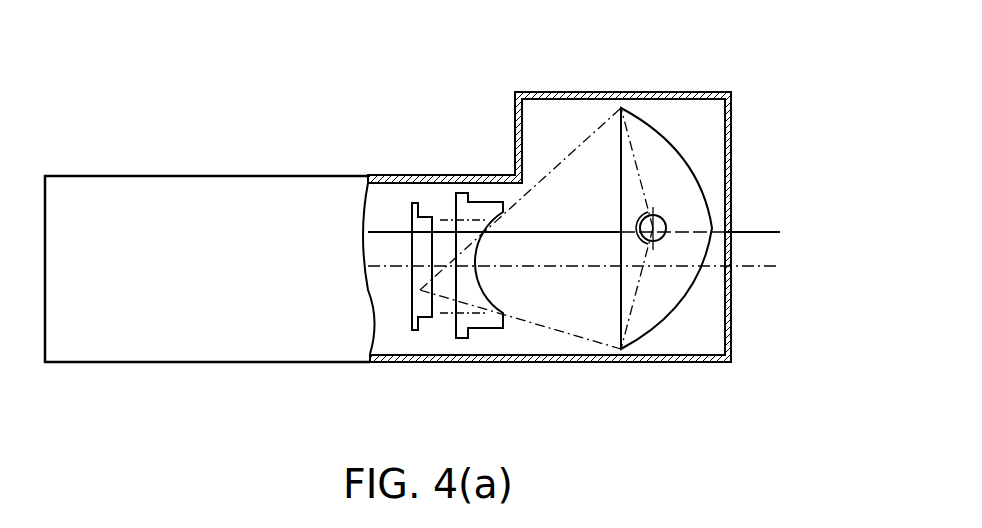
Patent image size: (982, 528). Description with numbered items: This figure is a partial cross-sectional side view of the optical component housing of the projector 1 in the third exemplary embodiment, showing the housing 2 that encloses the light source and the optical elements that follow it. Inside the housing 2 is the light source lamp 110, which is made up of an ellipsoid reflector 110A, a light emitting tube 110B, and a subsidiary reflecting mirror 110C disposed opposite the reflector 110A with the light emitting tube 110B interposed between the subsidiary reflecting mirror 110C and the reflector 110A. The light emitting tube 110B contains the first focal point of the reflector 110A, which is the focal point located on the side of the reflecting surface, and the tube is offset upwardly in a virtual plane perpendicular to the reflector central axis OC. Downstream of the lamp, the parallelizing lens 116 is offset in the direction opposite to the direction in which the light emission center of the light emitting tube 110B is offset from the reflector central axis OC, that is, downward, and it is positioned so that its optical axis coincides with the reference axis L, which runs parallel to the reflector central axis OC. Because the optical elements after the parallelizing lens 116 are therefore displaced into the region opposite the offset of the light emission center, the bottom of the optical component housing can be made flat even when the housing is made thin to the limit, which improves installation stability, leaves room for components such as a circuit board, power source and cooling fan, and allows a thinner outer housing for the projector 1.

The projector 1 is at (385, 98).
The housing 2 is at (537, 92).
The light source lamp 110 is at (744, 196).
The reflector 110A is at (687, 162).
The light emitting tube 110B is at (661, 216).
The subsidiary reflecting mirror 110C is at (639, 208).
The parallelizing lens 116 is at (485, 332).
The reflector central axis OC is at (755, 232).
The reference axis L is at (755, 268).